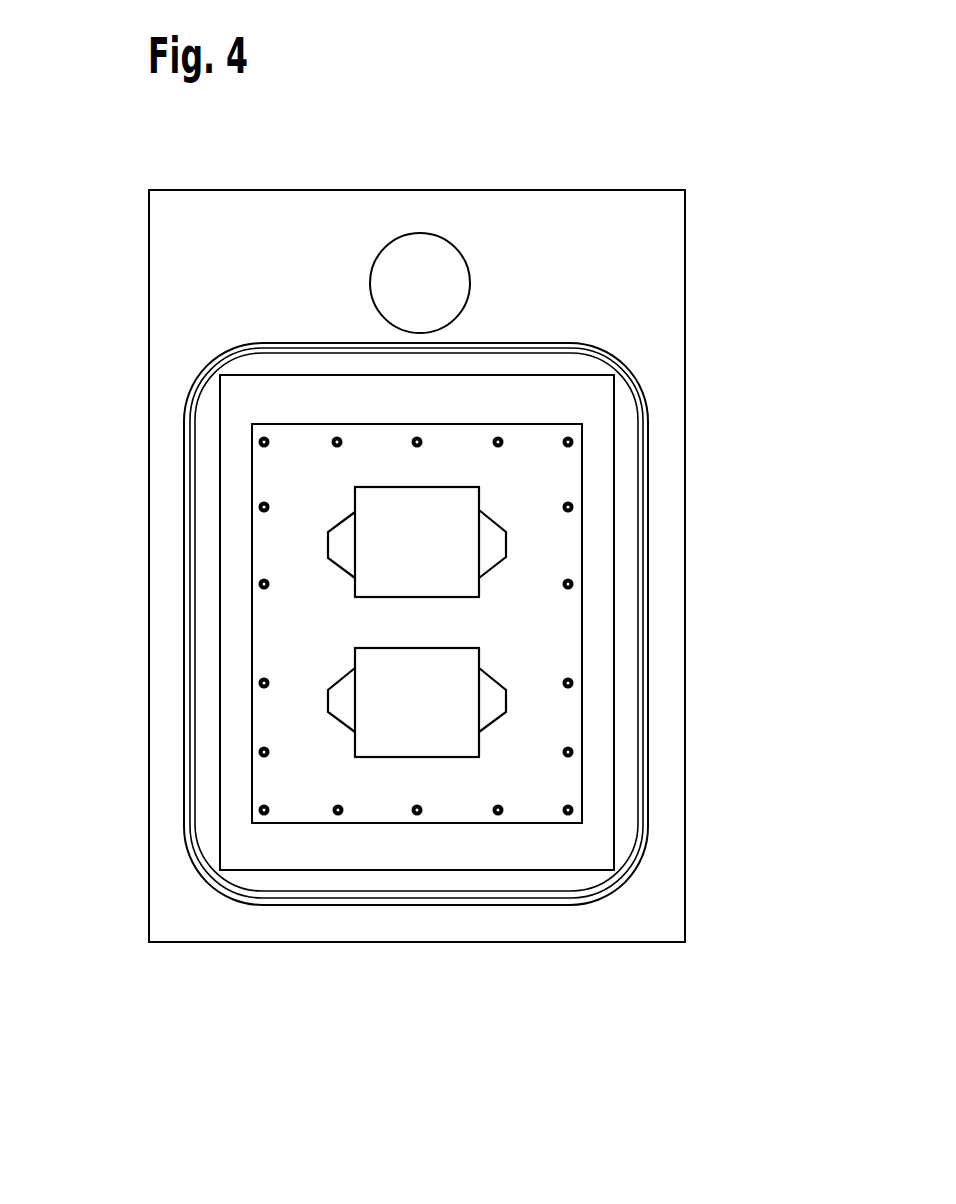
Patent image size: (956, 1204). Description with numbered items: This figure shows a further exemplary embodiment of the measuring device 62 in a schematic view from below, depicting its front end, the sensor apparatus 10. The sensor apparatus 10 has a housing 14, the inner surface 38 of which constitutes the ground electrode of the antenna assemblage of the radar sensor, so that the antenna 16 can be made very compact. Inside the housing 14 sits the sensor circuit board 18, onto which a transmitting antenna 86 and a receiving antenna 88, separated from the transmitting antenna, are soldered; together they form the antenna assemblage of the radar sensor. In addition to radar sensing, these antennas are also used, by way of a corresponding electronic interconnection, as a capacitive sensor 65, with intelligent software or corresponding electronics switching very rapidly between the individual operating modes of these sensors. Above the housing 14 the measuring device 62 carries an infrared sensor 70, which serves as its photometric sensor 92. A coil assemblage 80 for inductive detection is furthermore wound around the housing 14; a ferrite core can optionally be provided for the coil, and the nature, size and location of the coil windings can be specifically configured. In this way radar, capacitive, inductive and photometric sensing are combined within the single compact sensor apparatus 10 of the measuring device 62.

The measuring device 62 is at (198, 283).
The sensor apparatus 10 is at (405, 624).
The infrared sensor 70 is at (589, 283).
The photometric sensor 92 is at (468, 269).
The inner surface 38 is at (555, 400).
The sensor circuit board 18 is at (555, 480).
The transmitting antenna 86 is at (568, 542).
The antenna 16 is at (467, 544).
The receiving antenna 88 is at (568, 702).
The capacitive sensor 65 is at (466, 694).
The coil assemblage 80 is at (648, 800).
The housing 14 is at (468, 700).